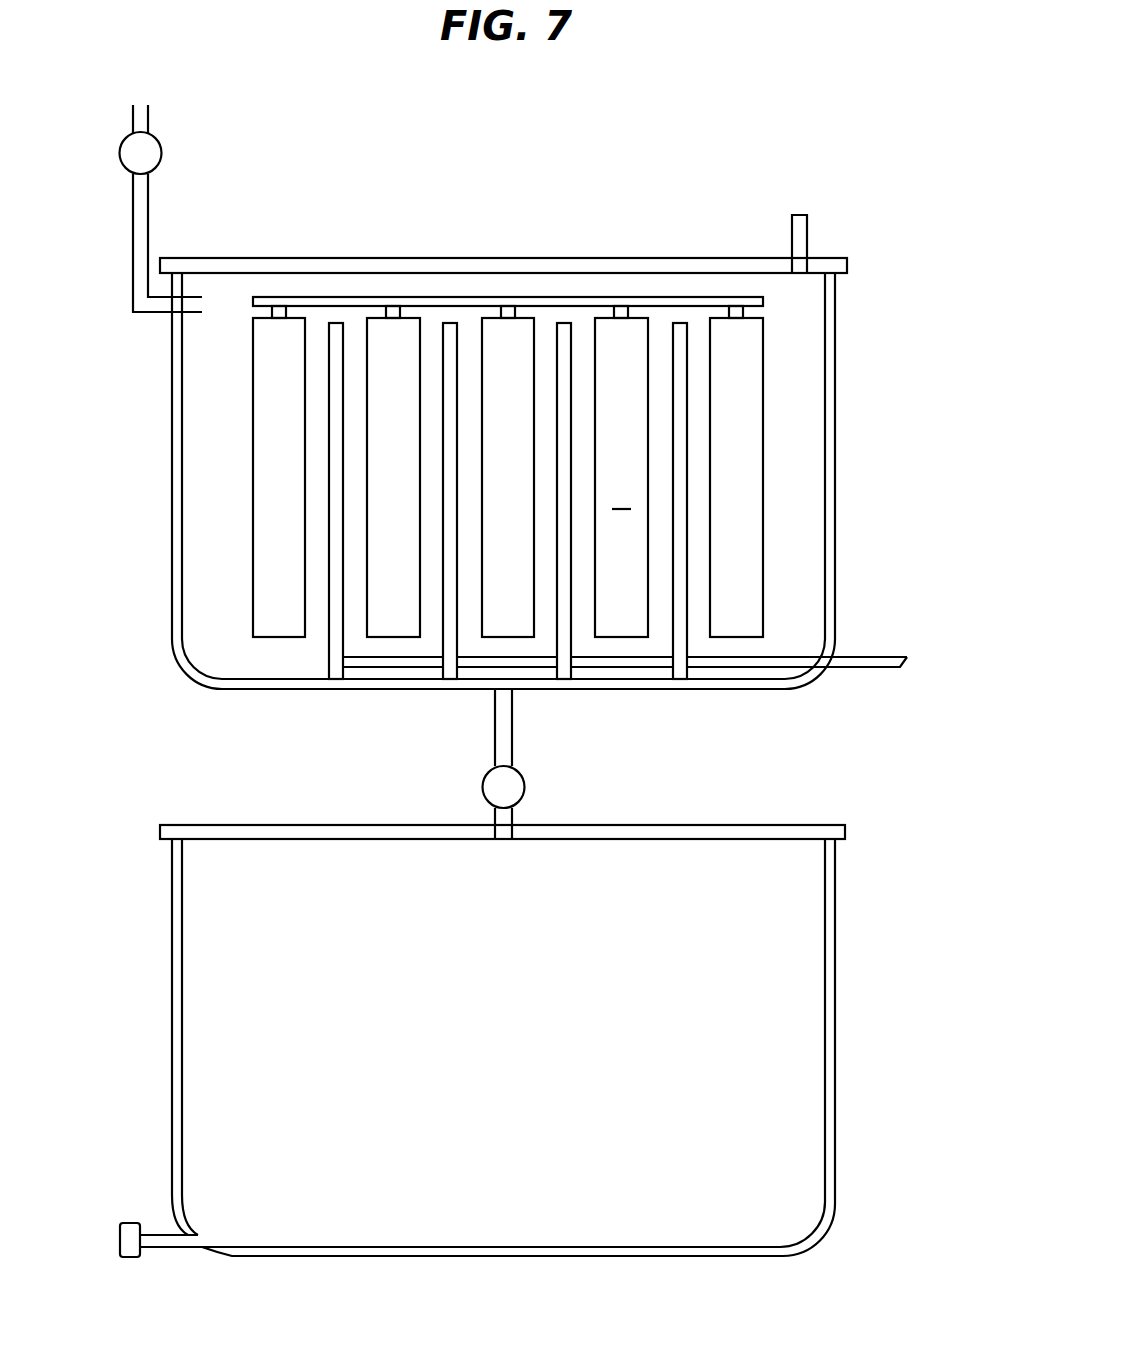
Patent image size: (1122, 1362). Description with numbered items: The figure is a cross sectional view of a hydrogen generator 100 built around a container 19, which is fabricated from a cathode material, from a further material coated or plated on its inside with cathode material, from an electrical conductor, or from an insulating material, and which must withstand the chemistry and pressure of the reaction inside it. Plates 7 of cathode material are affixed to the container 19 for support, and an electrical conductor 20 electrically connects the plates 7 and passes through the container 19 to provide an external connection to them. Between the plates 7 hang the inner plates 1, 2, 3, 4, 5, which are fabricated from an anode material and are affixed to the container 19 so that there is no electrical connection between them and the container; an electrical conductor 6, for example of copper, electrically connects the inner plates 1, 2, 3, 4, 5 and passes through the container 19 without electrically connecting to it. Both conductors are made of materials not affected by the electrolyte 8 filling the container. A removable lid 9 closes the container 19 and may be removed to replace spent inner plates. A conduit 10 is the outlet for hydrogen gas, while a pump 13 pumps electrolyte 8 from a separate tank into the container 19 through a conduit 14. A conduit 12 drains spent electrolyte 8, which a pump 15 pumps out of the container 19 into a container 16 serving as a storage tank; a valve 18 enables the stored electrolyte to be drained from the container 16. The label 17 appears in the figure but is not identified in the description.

The hydrogen generator 100 is at (453, 199).
The conduit 14 is at (138, 112).
The pump 13 is at (148, 155).
The inner plate 4 is at (141, 194).
The lid 9 is at (835, 268).
The conduit 10 is at (798, 214).
The container 19 is at (830, 336).
The electrolyte 8 is at (805, 589).
The electrical conductor 6 is at (763, 301).
The inner plate 1 is at (289, 509).
The inner plate 2 is at (403, 509).
The inner plate 3 is at (518, 509).
The inner plate 5 is at (746, 509).
The plates 7 is at (335, 672).
The electrical conductor 20 is at (905, 661).
The conduit 12 is at (505, 731).
The pump 15 is at (512, 789).
The container 16 is at (830, 873).
The stored liquid in storage tank 17 is at (770, 1046).
The valve 18 is at (130, 1241).